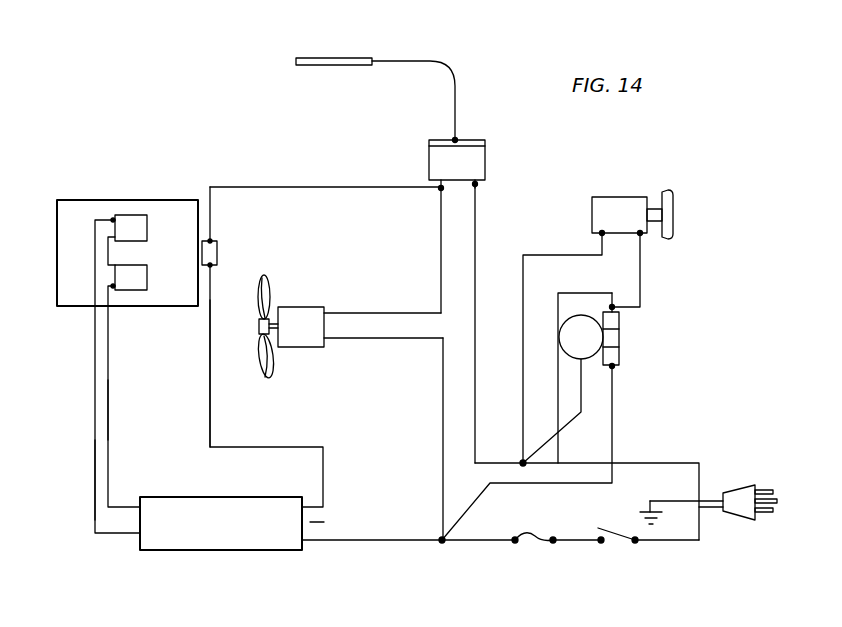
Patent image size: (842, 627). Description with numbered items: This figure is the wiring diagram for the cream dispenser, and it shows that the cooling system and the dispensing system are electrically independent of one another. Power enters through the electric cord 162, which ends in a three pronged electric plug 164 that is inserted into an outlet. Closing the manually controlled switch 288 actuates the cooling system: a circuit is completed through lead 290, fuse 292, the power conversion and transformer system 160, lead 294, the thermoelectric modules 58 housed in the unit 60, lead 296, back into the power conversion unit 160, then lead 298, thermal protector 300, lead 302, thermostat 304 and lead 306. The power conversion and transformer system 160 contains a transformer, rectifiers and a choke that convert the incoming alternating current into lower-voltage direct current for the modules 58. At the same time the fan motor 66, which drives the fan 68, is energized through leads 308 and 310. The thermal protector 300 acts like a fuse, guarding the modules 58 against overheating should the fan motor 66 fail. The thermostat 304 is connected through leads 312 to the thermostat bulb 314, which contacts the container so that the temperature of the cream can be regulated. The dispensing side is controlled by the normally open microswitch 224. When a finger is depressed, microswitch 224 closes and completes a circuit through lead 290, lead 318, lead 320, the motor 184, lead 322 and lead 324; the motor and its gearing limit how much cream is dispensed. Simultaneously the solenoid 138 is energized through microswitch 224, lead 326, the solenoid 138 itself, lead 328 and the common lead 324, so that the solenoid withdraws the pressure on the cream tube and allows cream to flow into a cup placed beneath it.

The thermoelectric modules 58 is at (137, 228).
The control unit 60 is at (127, 236).
The fan motor 66 is at (305, 313).
The fan blades 68 is at (247, 330).
The solenoid 138 is at (632, 202).
The power conversion and transformer system 160 is at (222, 539).
The electric cord 162 is at (716, 490).
The three pronged electric plug 164 is at (752, 515).
The motor 184 is at (567, 347).
The microswitch 224 is at (620, 334).
The manually controlled switch 288 is at (614, 542).
The lead 290 is at (580, 542).
The fuse 292 is at (527, 545).
The lead 294 is at (96, 441).
The lead 296 is at (108, 382).
The lead 298 is at (210, 408).
The thermal protector 300 is at (217, 257).
The lead 302 is at (345, 160).
The thermostat 304 is at (478, 160).
The lead 306 is at (475, 240).
The lead 308 is at (441, 235).
The lead 310 is at (443, 455).
The leads 312 is at (395, 61).
The thermostat bulb 314 is at (365, 32).
The lead 318 is at (612, 445).
The lead 320 is at (584, 363).
The lead 322 is at (544, 448).
The lead 324 is at (640, 463).
The lead 326 is at (641, 276).
The lead 328 is at (523, 292).